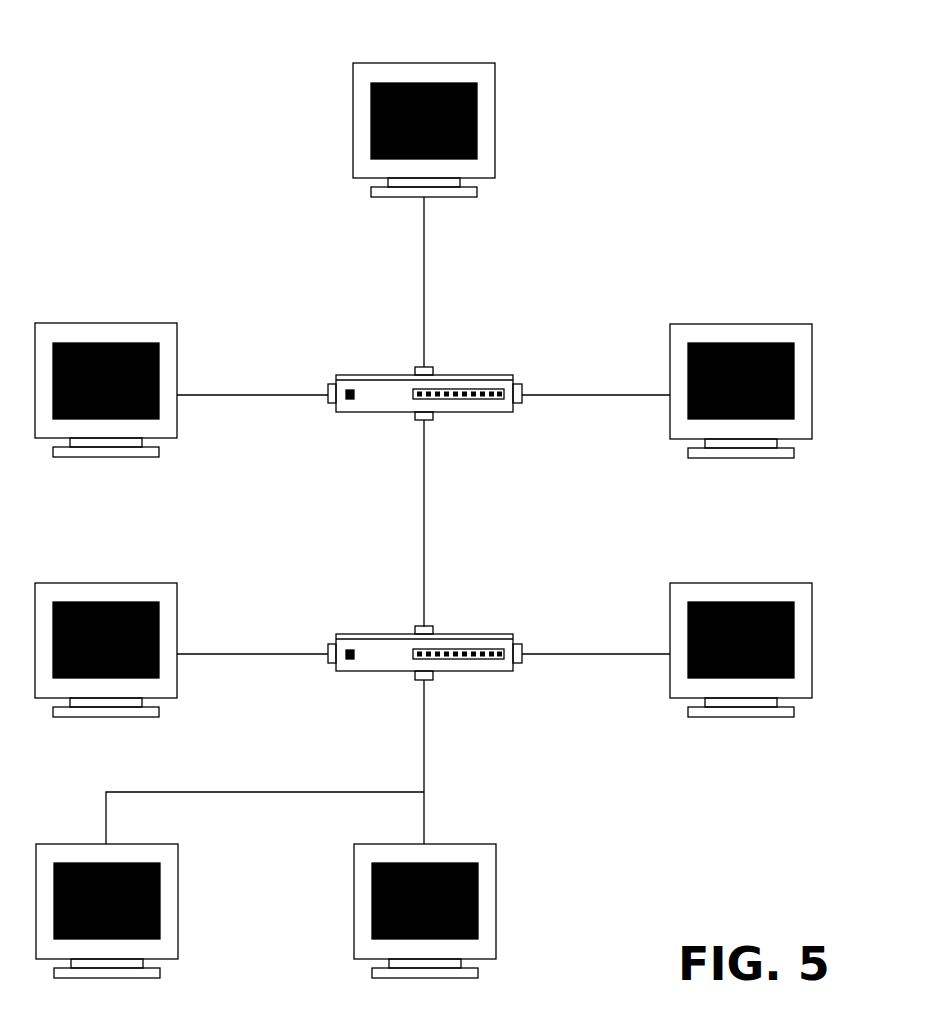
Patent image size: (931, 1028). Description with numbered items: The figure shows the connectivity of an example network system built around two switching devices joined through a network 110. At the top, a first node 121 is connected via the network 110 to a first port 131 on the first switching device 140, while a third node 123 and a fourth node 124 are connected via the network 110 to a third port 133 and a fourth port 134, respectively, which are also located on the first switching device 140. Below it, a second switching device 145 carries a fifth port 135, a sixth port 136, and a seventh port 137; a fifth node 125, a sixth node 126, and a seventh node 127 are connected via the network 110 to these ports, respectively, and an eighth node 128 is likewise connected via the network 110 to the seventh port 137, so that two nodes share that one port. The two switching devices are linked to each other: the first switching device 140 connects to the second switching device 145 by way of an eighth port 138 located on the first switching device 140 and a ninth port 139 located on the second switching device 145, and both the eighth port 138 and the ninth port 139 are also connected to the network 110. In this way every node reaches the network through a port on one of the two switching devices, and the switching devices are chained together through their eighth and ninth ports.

The network 110 is at (424, 272).
The first node 121 is at (424, 63).
The third node 123 is at (740, 324).
The fourth node 124 is at (106, 323).
The fifth node 125 is at (106, 583).
The sixth node 126 is at (740, 583).
The seventh node 127 is at (463, 844).
The eighth node 128 is at (178, 878).
The first port 131 is at (415, 367).
The third port 133 is at (522, 403).
The fourth port 134 is at (328, 400).
The fifth port 135 is at (328, 659).
The sixth port 136 is at (522, 663).
The seventh port 137 is at (418, 680).
The eighth port 138 is at (417, 420).
The ninth port 139 is at (418, 627).
The first switching device 140 is at (460, 375).
The second switching device 145 is at (442, 634).